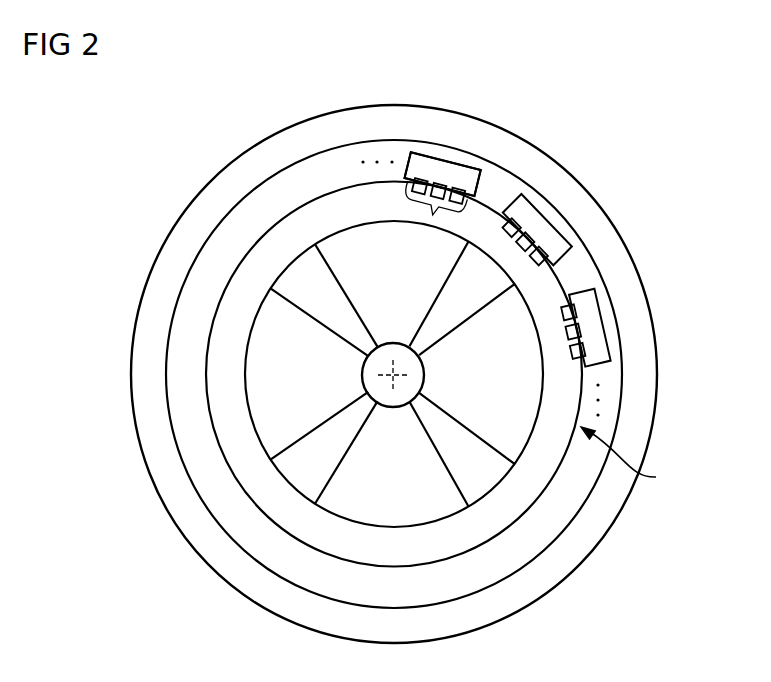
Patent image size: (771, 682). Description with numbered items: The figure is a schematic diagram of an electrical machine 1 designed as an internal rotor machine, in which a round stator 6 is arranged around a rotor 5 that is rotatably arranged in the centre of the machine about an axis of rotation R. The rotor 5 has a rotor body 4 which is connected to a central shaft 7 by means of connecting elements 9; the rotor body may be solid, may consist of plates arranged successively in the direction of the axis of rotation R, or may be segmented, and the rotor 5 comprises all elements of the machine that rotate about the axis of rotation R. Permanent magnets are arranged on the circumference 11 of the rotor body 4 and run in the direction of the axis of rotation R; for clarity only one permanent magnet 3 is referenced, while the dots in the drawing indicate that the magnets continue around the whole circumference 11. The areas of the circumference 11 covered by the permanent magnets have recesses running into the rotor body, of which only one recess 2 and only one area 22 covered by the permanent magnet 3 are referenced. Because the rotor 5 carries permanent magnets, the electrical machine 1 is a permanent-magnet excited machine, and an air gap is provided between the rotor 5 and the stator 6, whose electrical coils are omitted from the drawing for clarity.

The electrical machine 1 is at (607, 141).
The recess 2 is at (457, 196).
The permanent magnet 3 is at (440, 168).
The rotor body 4 is at (542, 457).
The rotor 5 is at (628, 460).
The stator 6 is at (648, 398).
The shaft 7 is at (417, 373).
The connecting elements 9 is at (297, 277).
The circumference 11 is at (537, 505).
The area covered by the permanent magnet 22 is at (432, 219).
The axis of rotation R is at (392, 374).